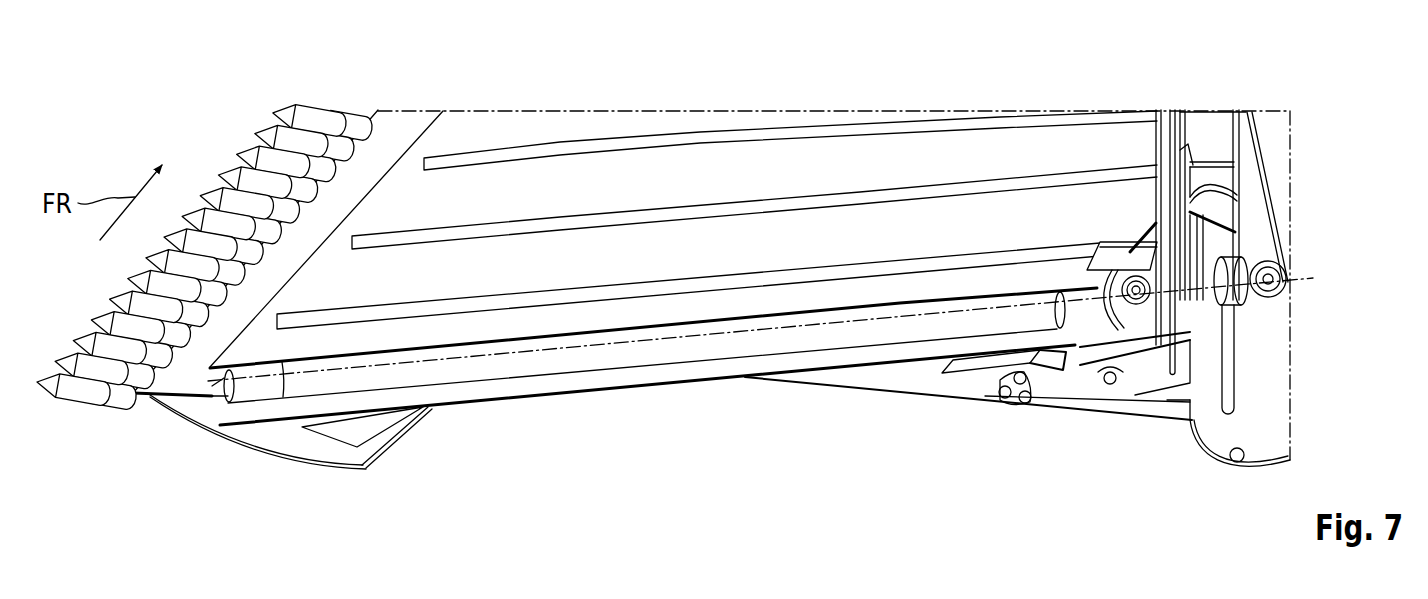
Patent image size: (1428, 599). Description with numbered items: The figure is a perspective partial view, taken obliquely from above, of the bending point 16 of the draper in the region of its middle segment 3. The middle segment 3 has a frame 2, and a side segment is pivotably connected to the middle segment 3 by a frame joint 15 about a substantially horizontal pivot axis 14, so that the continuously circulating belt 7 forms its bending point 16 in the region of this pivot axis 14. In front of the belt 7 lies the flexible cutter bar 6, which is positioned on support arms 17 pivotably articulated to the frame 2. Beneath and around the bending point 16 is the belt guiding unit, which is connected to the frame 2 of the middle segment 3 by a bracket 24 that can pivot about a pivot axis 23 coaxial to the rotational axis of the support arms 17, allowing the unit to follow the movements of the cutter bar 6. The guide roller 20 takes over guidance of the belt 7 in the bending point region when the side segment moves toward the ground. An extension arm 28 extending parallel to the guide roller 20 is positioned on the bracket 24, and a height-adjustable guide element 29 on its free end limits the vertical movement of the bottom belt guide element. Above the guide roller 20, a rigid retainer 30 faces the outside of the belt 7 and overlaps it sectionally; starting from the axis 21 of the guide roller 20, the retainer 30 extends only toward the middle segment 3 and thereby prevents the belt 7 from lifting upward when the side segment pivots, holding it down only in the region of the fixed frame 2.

The frame 2 is at (1265, 413).
The middle segment 3 is at (1262, 116).
The flexible cutter bar 6 is at (202, 172).
The circulating belt 7 is at (580, 185).
The pivot axis 14 is at (1313, 278).
The frame joint 15 is at (1288, 241).
The bending point 16 is at (1270, 197).
The support arm 17 is at (885, 382).
The guide roller 20 is at (472, 377).
The axis of the guide roller 21 is at (557, 347).
The pivot axis 23 is at (1110, 385).
The bracket 24 is at (1073, 414).
The extension arm 28 is at (1040, 397).
The guide element 29 is at (990, 398).
The retainer 30 is at (1116, 262).